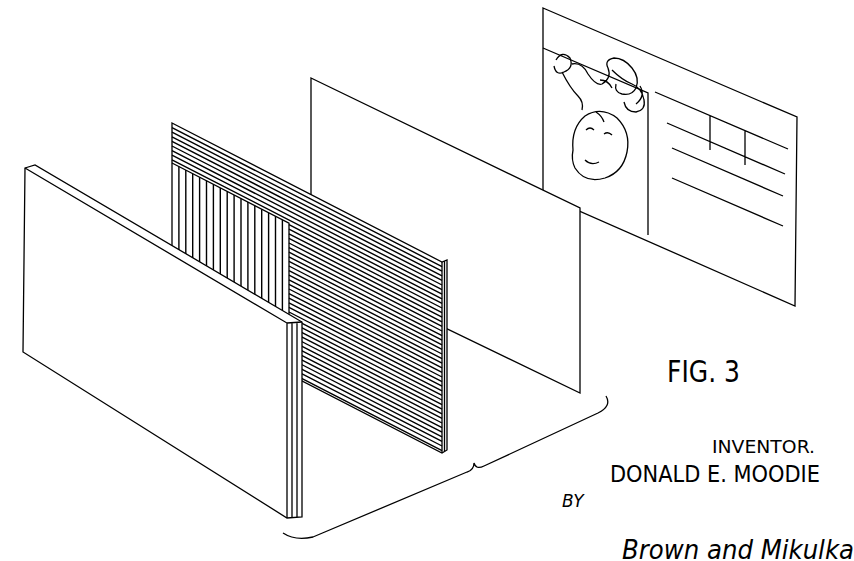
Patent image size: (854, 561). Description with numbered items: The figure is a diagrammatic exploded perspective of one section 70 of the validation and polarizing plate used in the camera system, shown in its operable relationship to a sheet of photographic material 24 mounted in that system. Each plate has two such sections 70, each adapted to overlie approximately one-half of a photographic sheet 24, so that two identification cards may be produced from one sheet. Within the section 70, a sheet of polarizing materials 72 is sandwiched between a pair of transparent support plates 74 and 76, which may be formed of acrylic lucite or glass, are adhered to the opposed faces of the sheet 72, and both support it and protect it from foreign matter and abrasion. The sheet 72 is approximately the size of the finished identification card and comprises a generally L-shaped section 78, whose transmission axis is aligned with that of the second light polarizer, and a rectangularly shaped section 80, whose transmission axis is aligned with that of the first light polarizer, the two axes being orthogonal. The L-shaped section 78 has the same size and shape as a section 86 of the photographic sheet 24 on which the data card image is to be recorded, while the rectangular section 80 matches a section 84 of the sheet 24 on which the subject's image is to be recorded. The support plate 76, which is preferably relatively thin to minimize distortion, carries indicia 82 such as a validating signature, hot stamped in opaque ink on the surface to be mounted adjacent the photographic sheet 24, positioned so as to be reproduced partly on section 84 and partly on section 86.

The sheet of photographic material 24 is at (665, 157).
The section of the polarizing plate 70 is at (445, 467).
The sheet of polarizing materials 72 is at (279, 283).
The transparent support plate 74 is at (215, 458).
The transparent support plate 76 is at (445, 223).
The L-shaped section 78 is at (395, 422).
The rectangularly shaped section 80 is at (177, 205).
The indicia 82 is at (332, 112).
The section of the photographic sheet 84 is at (545, 83).
The section of the photographic sheet 86 is at (790, 240).